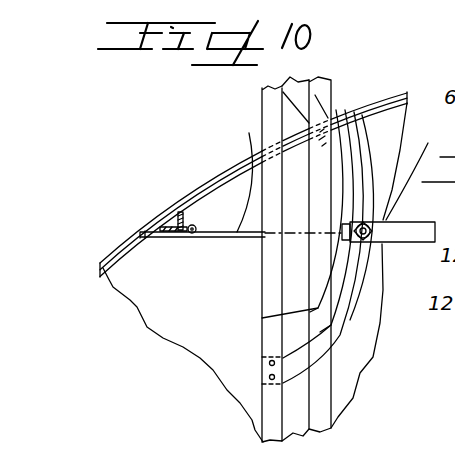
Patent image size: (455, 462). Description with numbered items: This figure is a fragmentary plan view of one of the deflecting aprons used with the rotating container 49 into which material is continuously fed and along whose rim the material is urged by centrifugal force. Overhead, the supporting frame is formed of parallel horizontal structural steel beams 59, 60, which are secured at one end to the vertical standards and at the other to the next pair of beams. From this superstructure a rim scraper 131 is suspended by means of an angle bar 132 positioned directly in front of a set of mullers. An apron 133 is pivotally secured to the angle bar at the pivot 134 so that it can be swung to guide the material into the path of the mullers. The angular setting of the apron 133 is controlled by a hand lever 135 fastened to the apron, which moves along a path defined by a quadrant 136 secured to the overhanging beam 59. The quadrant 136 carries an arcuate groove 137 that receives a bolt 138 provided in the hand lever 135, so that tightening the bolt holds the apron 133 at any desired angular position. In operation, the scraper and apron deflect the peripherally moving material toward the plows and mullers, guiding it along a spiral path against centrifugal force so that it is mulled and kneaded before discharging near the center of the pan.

The container 49 is at (187, 195).
The structural steel beam 59 is at (251, 264).
The structural steel beam 60 is at (273, 302).
The rim scraper 131 is at (157, 242).
The angle bar 132 is at (185, 219).
The apron 133 is at (239, 172).
The pivot 134 is at (195, 233).
The hand lever 135 is at (419, 170).
The quadrant 136 is at (378, 230).
The arcuate groove 137 is at (345, 142).
The bolt 138 is at (342, 323).